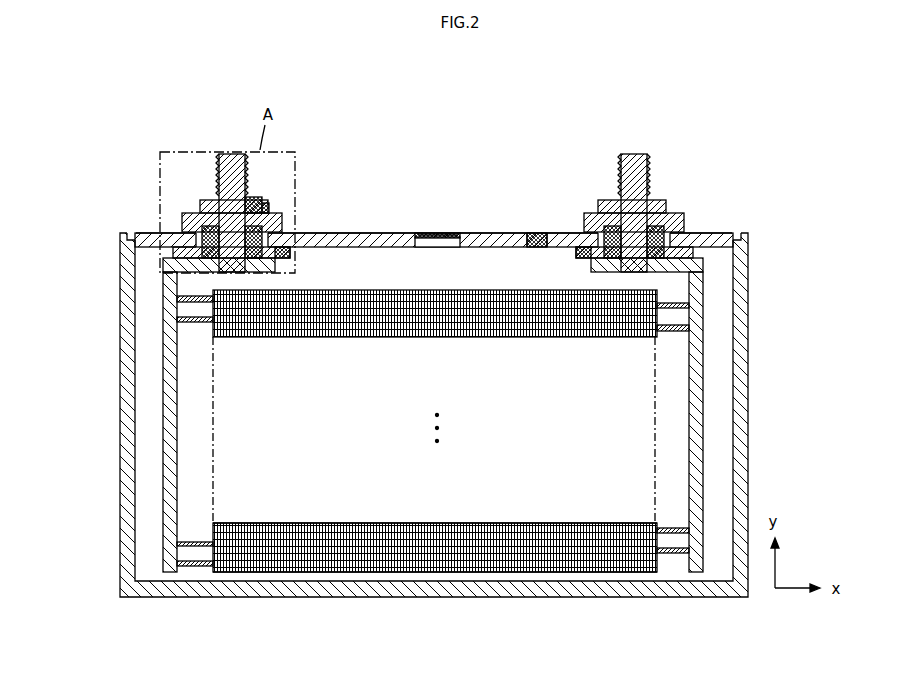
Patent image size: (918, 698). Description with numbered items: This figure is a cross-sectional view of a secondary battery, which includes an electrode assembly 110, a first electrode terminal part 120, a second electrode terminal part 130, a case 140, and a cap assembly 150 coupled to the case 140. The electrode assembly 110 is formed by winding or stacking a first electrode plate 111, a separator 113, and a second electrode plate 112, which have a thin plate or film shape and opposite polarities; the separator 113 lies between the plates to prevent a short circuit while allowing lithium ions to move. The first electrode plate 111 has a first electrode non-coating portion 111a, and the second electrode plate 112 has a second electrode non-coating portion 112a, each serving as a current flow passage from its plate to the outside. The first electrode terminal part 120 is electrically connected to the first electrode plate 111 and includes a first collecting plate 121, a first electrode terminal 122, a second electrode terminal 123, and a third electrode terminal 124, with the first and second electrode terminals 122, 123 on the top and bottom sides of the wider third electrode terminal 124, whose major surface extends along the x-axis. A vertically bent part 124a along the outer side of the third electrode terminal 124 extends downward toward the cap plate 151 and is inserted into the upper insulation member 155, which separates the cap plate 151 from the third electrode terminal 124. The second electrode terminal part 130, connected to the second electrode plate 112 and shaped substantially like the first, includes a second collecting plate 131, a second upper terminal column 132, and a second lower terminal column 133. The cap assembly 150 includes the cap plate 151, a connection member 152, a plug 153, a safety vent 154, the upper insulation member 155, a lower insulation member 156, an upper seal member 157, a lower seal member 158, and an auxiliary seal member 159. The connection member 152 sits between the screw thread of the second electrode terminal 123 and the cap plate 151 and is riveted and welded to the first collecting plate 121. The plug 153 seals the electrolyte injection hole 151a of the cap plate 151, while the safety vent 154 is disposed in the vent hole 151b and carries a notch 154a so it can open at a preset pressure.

The electrode assembly 110 is at (434, 469).
The first electrode plate 111 is at (318, 572).
The first electrode non-coating portion 111a is at (195, 566).
The second electrode plate 112 is at (585, 572).
The second electrode non-coating portion 112a is at (675, 553).
The separator 113 is at (451, 572).
The first electrode terminal part 120 is at (212, 180).
The first collecting plate 121 is at (163, 342).
The first electrode terminal 122 is at (217, 172).
The second electrode terminal 123 is at (190, 247).
The third electrode terminal 124 is at (262, 203).
The vertically bent part 124a is at (269, 210).
The second electrode terminal part 130 is at (647, 180).
The second collecting plate 131 is at (703, 340).
The second upper terminal column 132 is at (648, 172).
The second lower terminal column 133 is at (700, 247).
The case 140 is at (747, 392).
The cap assembly 150 is at (500, 158).
The cap plate 151 is at (492, 233).
The electrolyte injection hole 151a is at (537, 247).
The vent hole 151b is at (432, 247).
The connection member 152 is at (172, 275).
The plug 153 is at (537, 233).
The safety vent 154 is at (455, 233).
The notch 154a is at (428, 233).
The upper insulation member 155 is at (282, 222).
The lower insulation member 156 is at (290, 254).
The upper seal member 157 is at (212, 245).
The lower seal member 158 is at (185, 252).
The auxiliary seal member 159 is at (203, 205).